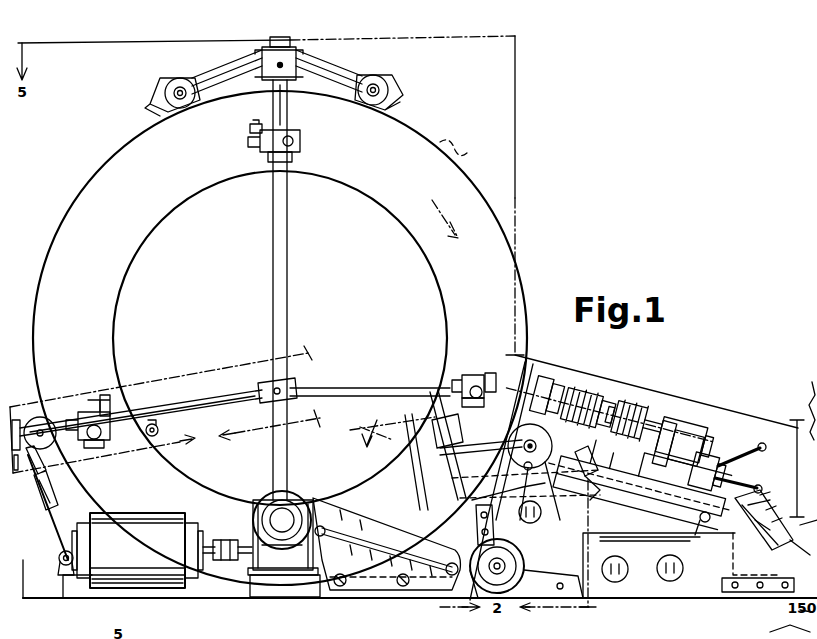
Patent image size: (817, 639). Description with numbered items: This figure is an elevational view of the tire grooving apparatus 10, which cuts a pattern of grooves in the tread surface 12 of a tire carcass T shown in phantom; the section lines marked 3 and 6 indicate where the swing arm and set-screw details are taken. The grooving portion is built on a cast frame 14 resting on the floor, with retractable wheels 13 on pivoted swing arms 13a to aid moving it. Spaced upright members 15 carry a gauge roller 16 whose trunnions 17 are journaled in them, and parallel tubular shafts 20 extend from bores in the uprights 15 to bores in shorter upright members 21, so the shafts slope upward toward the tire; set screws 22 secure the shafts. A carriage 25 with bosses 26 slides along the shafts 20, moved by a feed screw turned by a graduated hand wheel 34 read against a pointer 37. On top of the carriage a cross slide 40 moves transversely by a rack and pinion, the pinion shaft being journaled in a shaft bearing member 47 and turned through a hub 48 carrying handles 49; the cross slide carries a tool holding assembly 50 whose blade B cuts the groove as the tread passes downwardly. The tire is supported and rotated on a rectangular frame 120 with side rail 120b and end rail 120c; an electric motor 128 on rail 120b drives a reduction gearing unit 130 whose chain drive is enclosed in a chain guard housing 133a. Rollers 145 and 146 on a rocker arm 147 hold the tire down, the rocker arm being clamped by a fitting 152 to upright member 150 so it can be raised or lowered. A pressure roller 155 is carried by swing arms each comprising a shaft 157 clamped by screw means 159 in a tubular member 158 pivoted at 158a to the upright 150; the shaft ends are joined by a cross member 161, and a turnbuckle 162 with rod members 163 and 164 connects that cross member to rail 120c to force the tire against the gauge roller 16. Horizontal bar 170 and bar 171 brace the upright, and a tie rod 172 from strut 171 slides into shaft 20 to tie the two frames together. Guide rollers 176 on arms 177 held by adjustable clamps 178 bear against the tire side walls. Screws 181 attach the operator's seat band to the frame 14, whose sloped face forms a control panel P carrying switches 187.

The tire grooving apparatus 10 is at (535, 225).
The tread surface 12 is at (525, 292).
The tire carcass T is at (462, 150).
The retractable wheels 13 is at (524, 560).
The swing arms 13a is at (494, 518).
The frame 14 is at (692, 585).
The upright members 15 is at (500, 468).
The gauge roller 16 is at (512, 450).
The axle stubs or trunnions 17 is at (526, 426).
The tubular ways or shafts 20 is at (670, 505).
The upright members 21 is at (698, 525).
The set screws 22 is at (503, 510).
The carriage 25 is at (590, 490).
The bosses 26 is at (620, 505).
The graduated hand wheel 34 is at (770, 518).
The pointer or index 37 is at (768, 500).
The cross slide 40 is at (668, 448).
The shaft bearing member 47 is at (690, 460).
The hub 48 is at (725, 460).
The shaft rotating handles 49 is at (755, 448).
The tire grooving tool holding assembly 50 is at (607, 390).
The rectangular frame 120 is at (156, 596).
The side rail 120b is at (205, 595).
The end rail 120c is at (63, 575).
The electric motor 128 is at (120, 505).
The reduction gearing unit 130 is at (260, 504).
The chain guard housing 133a is at (320, 502).
The roller 145 is at (170, 78).
The roller 146 is at (383, 75).
The rocker arm 147 is at (335, 72).
The upright member 150 is at (288, 105).
The fitting 152 is at (262, 54).
The pressure roller 155 is at (45, 418).
The shaft 157 is at (122, 410).
The tubular member 158 is at (200, 400).
The pivot 158a is at (292, 380).
The screw means 159 is at (150, 424).
The cross member 161 is at (16, 420).
The turnbuckle 162 is at (30, 500).
The rod member 163 is at (44, 478).
The rod member 164 is at (44, 536).
The horizontal bar 170 is at (388, 388).
The bar 171 is at (440, 470).
The tie rod 172 is at (470, 448).
The guide rollers 176 is at (252, 152).
The arm 177 is at (250, 130).
The adjustable clamp 178 is at (292, 156).
The screws 181 is at (775, 590).
The switches 187 is at (801, 537).
The blade B is at (506, 481).
The control panel P is at (763, 532).
The section line 3- 3 is at (166, 441).
The section line 6- 6 is at (392, 441).